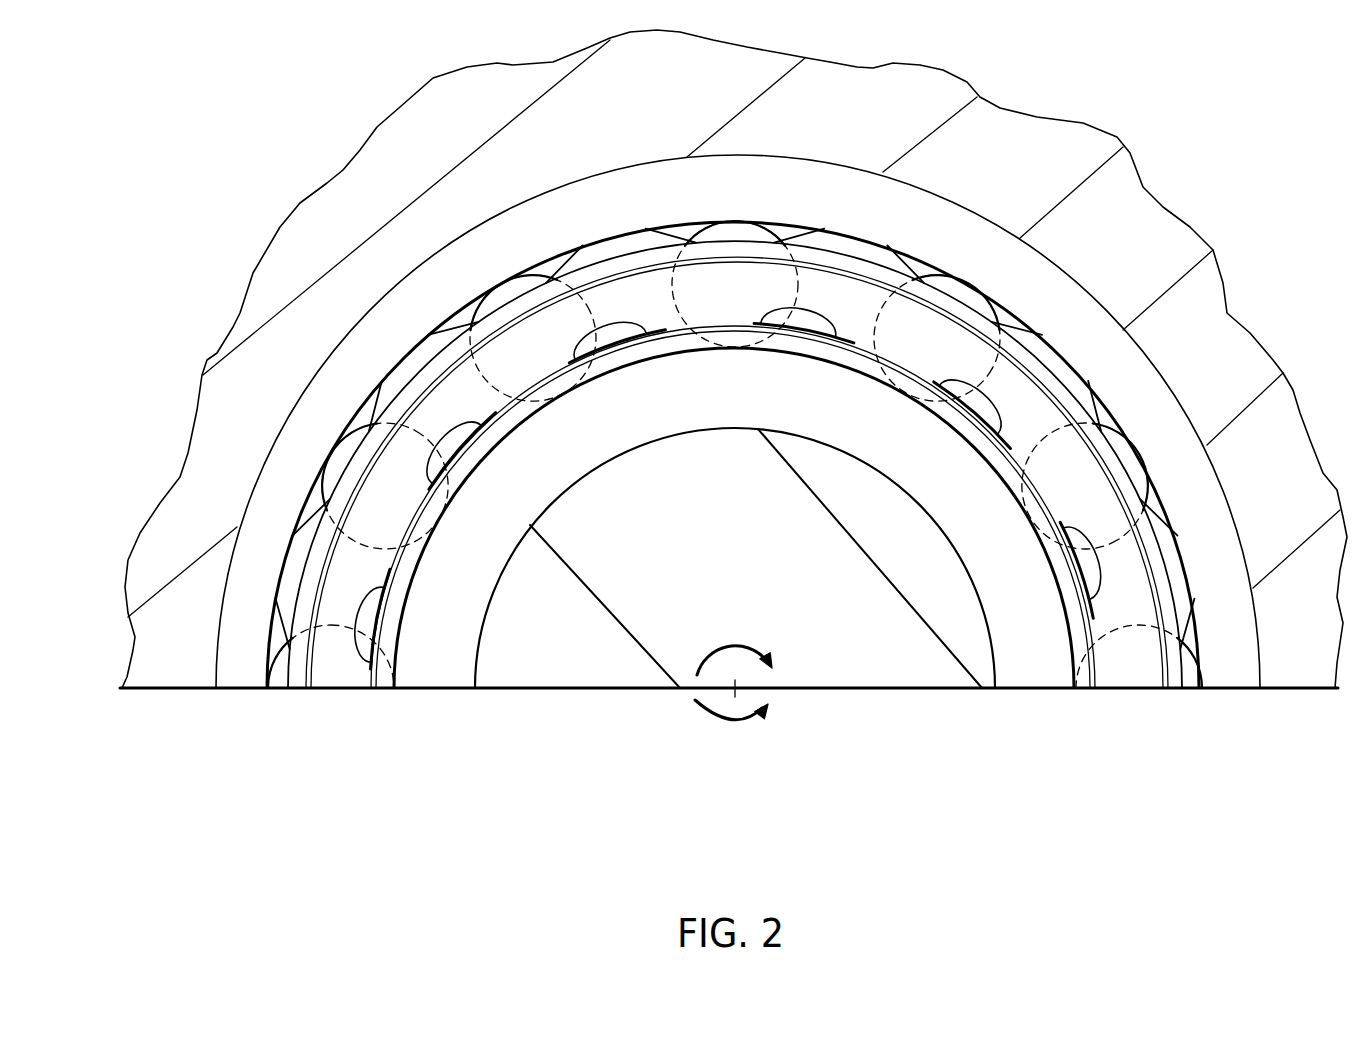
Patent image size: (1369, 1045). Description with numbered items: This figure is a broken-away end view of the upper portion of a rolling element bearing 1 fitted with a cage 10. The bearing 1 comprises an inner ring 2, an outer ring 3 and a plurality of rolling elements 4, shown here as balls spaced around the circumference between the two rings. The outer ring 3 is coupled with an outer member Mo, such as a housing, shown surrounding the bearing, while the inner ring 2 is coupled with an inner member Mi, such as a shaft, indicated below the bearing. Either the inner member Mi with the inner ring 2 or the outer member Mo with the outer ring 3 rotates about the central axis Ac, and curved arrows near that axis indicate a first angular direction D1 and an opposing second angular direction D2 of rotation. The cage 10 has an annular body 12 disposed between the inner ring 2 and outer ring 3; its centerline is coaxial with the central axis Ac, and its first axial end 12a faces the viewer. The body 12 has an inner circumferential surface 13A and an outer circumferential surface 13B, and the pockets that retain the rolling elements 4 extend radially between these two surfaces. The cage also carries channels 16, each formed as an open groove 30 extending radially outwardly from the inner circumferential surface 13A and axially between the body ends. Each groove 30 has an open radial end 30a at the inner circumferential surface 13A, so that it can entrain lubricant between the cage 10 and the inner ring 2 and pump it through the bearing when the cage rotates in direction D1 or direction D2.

The rolling element bearing 1 is at (437, 220).
The inner ring 2 is at (480, 622).
The outer ring 3 is at (738, 421).
The rolling elements 4 is at (741, 238).
The cage 10 is at (1102, 400).
The annular body 12 is at (735, 448).
The first axial end 12a is at (983, 405).
The inner circumferential surface 13A is at (680, 333).
The outer circumferential surface 13B is at (735, 448).
The channel 16 is at (803, 352).
The open groove 30 is at (734, 547).
The open radial end 30a is at (824, 358).
The outer member Mo is at (1072, 126).
The inner member Mi is at (916, 695).
The central axis Ac is at (742, 686).
The first angular direction D1 is at (720, 650).
The second angular direction D2 is at (728, 738).